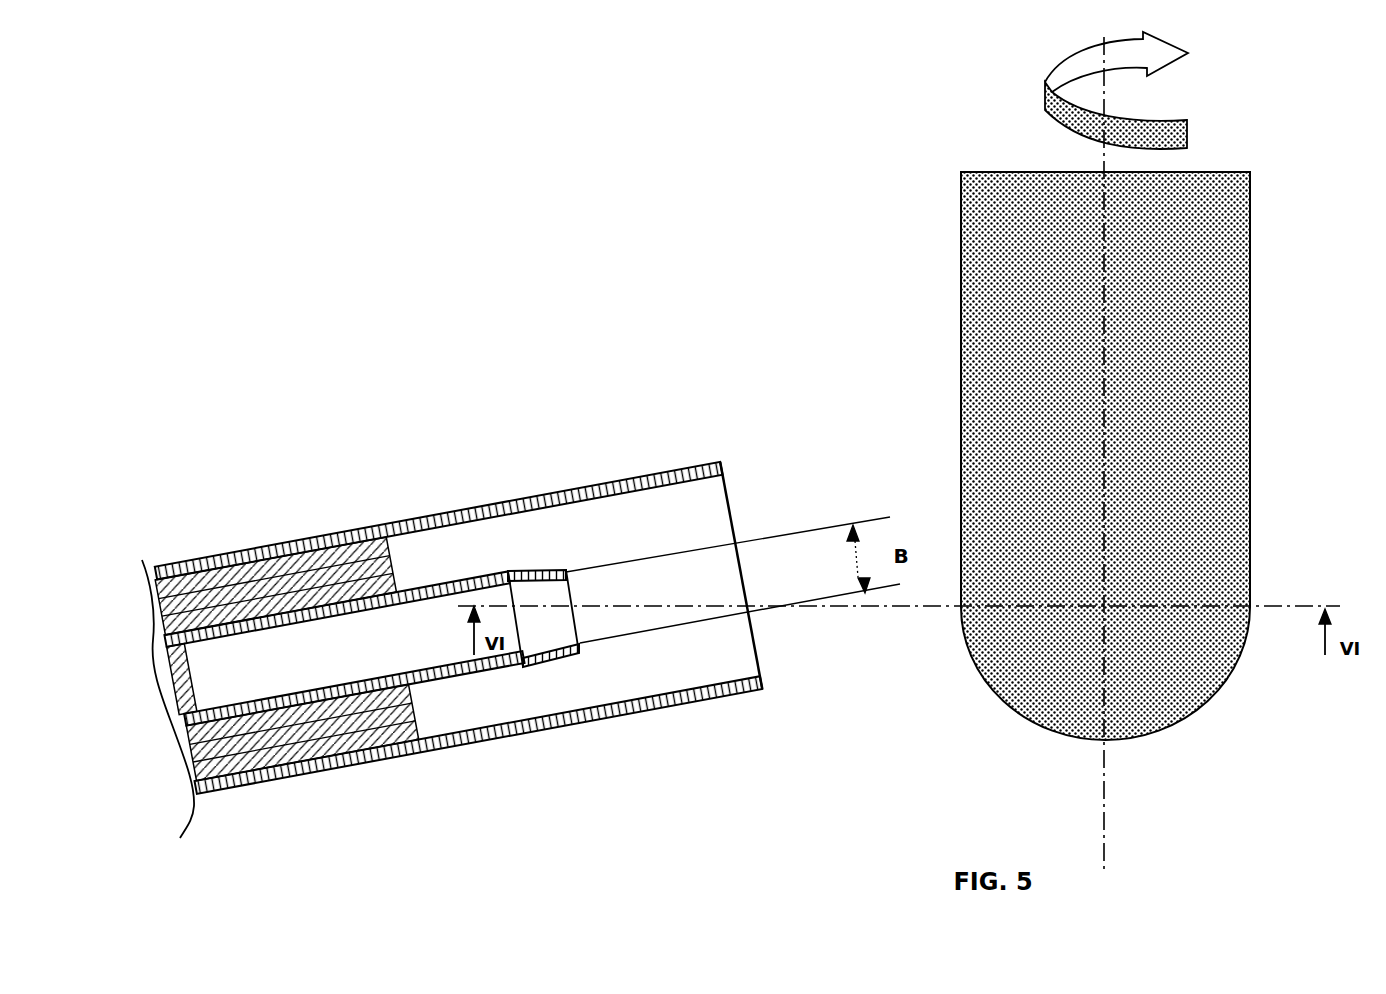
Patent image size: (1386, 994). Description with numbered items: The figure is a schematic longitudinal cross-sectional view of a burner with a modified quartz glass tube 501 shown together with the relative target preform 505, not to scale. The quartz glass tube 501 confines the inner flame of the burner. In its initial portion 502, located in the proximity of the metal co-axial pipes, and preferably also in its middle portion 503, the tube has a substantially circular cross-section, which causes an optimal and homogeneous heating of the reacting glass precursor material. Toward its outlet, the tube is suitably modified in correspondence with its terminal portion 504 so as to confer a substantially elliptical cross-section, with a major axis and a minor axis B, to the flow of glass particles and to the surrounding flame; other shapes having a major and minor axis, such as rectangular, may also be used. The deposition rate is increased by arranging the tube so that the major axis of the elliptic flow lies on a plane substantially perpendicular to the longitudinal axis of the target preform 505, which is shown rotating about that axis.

The quartz glass tube 501 is at (480, 677).
The initial portion 502 is at (228, 677).
The middle portion 503 is at (405, 632).
The terminal portion 504 is at (547, 597).
The target preform 505 is at (993, 383).